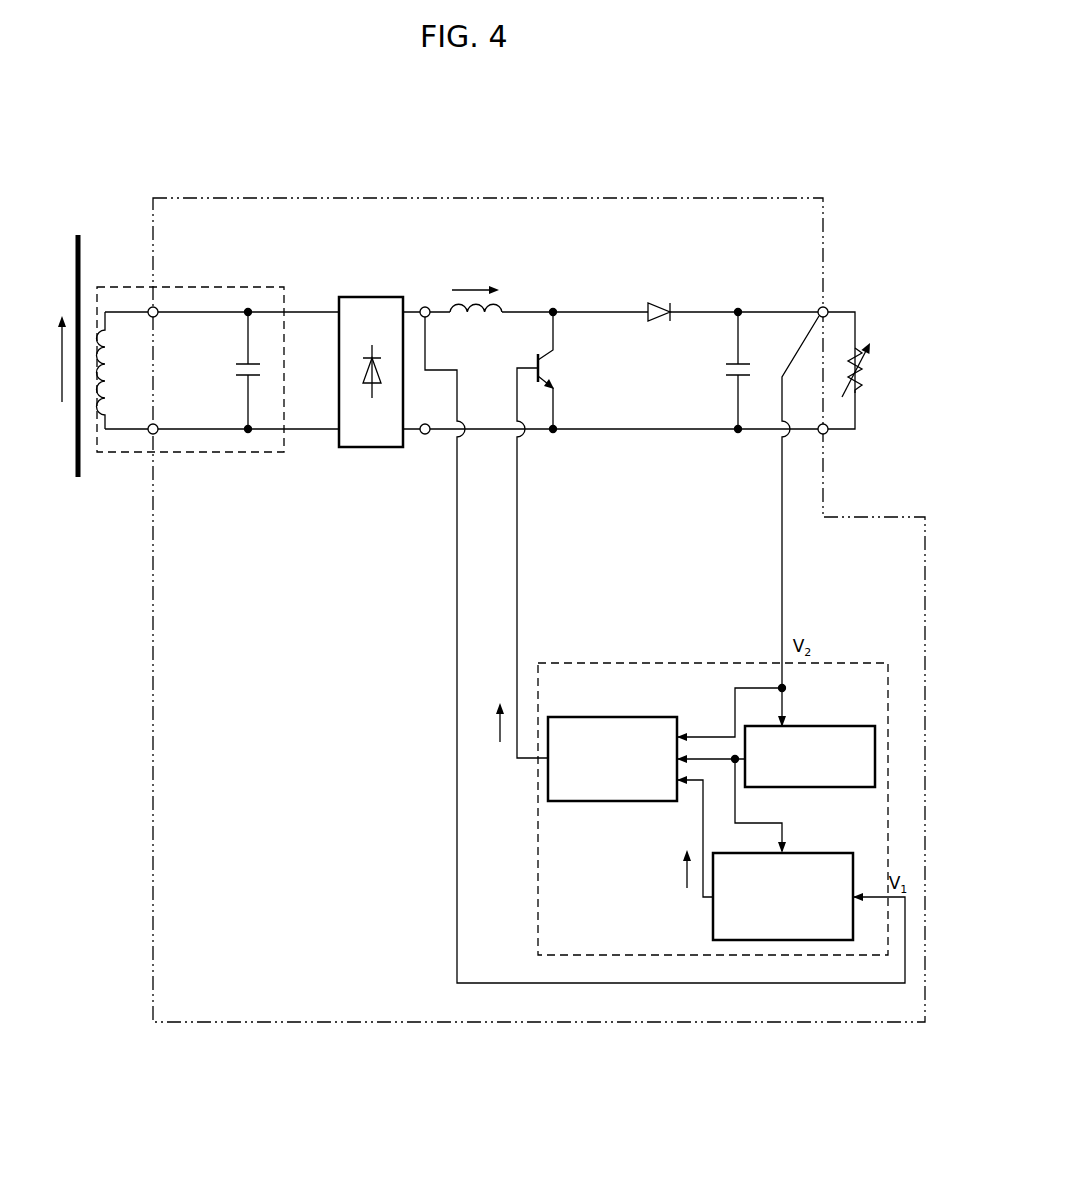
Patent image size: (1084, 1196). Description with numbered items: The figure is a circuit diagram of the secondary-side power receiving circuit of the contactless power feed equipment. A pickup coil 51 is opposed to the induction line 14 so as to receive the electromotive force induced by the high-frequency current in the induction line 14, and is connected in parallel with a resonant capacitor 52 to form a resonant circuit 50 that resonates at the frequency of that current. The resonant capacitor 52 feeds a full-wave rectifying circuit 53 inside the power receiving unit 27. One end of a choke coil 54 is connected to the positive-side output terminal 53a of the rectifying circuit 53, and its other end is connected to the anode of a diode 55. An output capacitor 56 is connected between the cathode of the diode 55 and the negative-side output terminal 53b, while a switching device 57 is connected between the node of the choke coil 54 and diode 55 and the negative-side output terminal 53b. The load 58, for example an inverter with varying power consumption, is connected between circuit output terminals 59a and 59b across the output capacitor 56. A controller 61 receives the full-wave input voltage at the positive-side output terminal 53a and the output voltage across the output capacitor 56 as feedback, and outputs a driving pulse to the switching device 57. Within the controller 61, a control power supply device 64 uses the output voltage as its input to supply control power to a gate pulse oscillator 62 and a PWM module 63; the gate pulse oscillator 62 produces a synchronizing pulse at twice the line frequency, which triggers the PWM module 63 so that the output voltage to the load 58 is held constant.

The induction line 14 is at (81, 247).
The power receiving unit 27 is at (812, 197).
The resonant circuit 50 is at (275, 284).
The pickup coil 51 is at (102, 382).
The resonant capacitor 52 is at (242, 364).
The rectifying circuit 53 is at (394, 297).
The positive-side output terminal 53a is at (430, 317).
The negative-side output terminal 53b is at (425, 434).
The choke coil 54 is at (510, 304).
The diode 55 is at (657, 304).
The output capacitor 56 is at (745, 363).
The switching device 57 is at (552, 372).
The load 58 is at (866, 349).
The circuit output terminal 59a is at (818, 306).
The circuit output terminal 59b is at (830, 435).
The controller 61 is at (846, 662).
The gate pulse oscillator 62 is at (712, 913).
The PWM module 63 is at (608, 802).
The control power supply device 64 is at (805, 726).